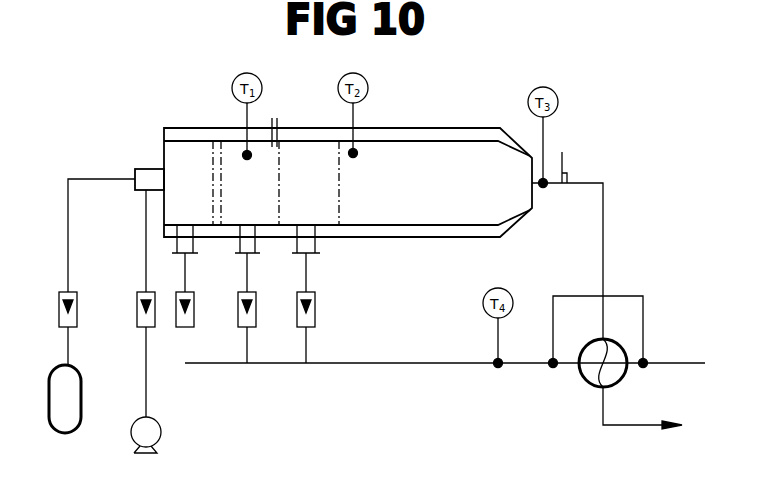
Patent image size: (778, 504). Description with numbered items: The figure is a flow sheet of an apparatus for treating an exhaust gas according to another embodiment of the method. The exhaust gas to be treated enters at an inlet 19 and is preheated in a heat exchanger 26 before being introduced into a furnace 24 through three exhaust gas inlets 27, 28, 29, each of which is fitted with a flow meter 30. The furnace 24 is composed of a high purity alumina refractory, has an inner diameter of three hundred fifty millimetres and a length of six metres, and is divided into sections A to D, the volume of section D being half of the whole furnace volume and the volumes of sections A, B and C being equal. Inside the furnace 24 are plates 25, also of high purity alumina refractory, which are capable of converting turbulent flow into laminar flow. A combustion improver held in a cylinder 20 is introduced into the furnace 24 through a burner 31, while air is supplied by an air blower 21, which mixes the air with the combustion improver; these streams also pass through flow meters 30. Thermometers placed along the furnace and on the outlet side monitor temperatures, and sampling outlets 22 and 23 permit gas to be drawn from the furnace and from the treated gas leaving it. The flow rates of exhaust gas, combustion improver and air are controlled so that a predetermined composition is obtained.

The inlet for exhaust gas 19 is at (457, 363).
The cylinder 20 is at (48, 415).
The air blower 21 is at (159, 431).
The sampling outlet 22 is at (278, 121).
The sampling outlet 23 is at (573, 140).
The furnace 24 is at (424, 128).
The plates 25 is at (216, 157).
The heat exchanger 26 is at (583, 381).
The exhaust gas inlet 27 is at (193, 247).
The exhaust gas inlet 28 is at (255, 246).
The exhaust gas inlet 29 is at (315, 246).
The flow meter 30 is at (77, 308).
The burner 31 is at (146, 168).